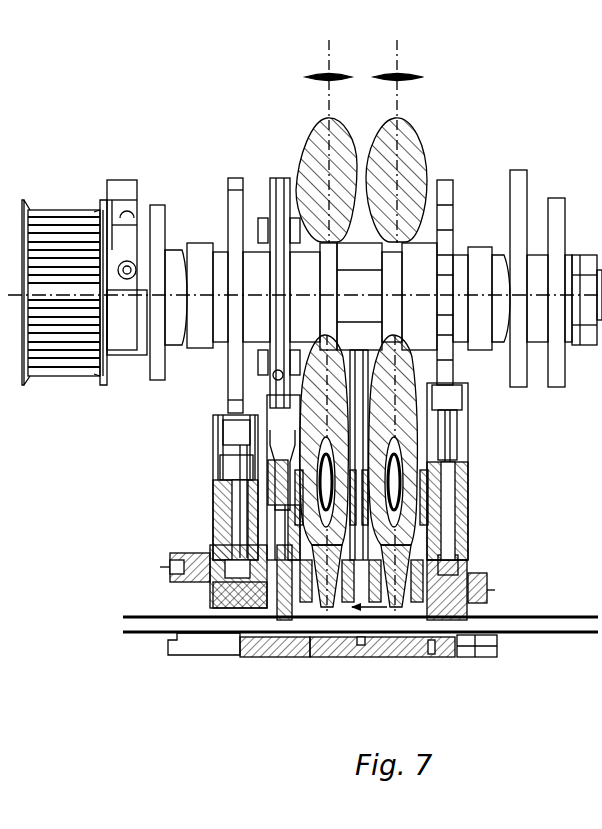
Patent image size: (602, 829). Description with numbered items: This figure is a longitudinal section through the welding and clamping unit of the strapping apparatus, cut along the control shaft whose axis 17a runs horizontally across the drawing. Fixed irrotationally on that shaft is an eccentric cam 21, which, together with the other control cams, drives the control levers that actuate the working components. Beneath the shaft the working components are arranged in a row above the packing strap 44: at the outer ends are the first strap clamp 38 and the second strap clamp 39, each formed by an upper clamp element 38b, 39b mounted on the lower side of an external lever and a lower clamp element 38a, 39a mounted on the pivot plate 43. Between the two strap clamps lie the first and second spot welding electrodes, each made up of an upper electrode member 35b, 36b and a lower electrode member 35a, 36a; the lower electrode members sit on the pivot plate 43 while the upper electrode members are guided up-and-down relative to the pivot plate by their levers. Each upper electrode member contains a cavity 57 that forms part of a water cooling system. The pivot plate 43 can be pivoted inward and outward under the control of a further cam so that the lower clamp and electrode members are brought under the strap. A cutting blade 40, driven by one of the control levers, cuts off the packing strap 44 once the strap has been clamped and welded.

The axis of the control shaft 17a is at (205, 295).
The eccentric cam 21 is at (280, 178).
The cavity 57 is at (215, 502).
The lower electrode member 35a is at (405, 662).
The upper electrode member 35b is at (472, 578).
The first strap clamp 38 is at (203, 597).
The lower clamp element 38a is at (232, 655).
The upper clamp element 38b is at (152, 603).
The second strap clamp 39 is at (475, 612).
The lower clamp element 39a is at (455, 660).
The upper clamp element 39b is at (472, 622).
The cutting blade 40 is at (305, 657).
The pivot plate 43 is at (283, 658).
The packing strap 44 is at (568, 655).
The lower electrode member 36a is at (317, 658).
The upper electrode member 36b is at (343, 658).